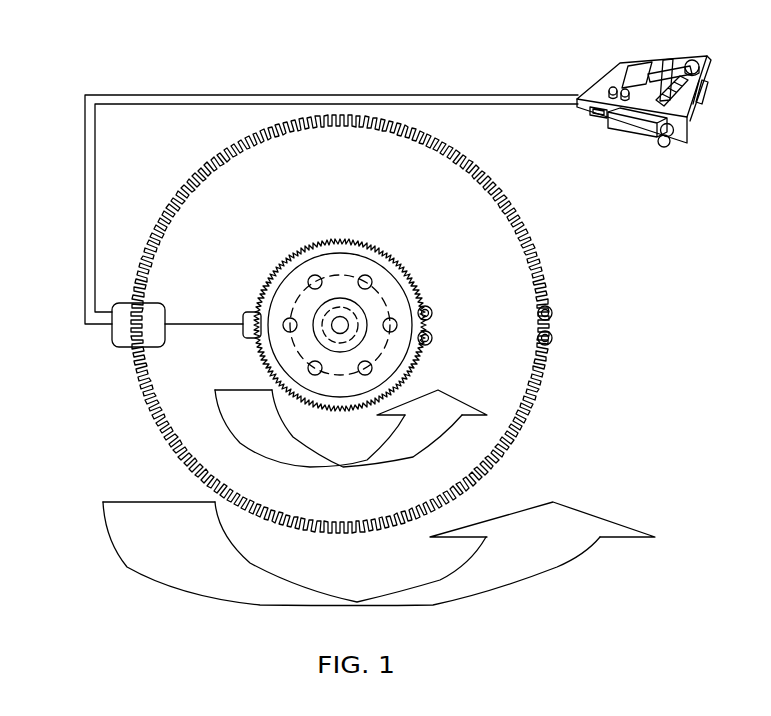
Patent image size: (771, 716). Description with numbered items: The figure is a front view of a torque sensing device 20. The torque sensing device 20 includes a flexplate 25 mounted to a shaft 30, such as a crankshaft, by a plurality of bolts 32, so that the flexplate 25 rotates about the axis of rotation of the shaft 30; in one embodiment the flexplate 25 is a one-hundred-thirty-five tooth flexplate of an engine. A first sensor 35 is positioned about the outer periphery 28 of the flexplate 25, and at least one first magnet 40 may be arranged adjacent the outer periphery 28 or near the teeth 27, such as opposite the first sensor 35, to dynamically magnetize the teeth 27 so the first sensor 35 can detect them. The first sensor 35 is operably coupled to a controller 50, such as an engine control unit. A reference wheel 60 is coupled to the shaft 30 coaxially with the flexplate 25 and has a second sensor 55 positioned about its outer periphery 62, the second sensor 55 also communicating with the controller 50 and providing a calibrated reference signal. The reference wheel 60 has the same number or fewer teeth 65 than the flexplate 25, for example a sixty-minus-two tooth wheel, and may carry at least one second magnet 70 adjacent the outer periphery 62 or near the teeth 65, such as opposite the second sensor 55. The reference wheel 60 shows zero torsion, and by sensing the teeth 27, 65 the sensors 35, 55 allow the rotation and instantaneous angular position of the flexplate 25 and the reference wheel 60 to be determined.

The torque sensing device 20 is at (66, 71).
The flexplate 25 is at (328, 292).
The teeth 27 is at (328, 292).
The outer periphery 28 is at (165, 438).
The shaft 30 is at (356, 323).
The bolts 32 is at (364, 273).
The first sensor 35 is at (120, 337).
The first magnet 40 is at (555, 343).
The controller 50 is at (708, 83).
The second sensor 55 is at (248, 312).
The reference wheel 60 is at (340, 342).
The outer periphery 62 is at (348, 345).
The teeth 65 is at (307, 400).
The second magnet 70 is at (432, 341).